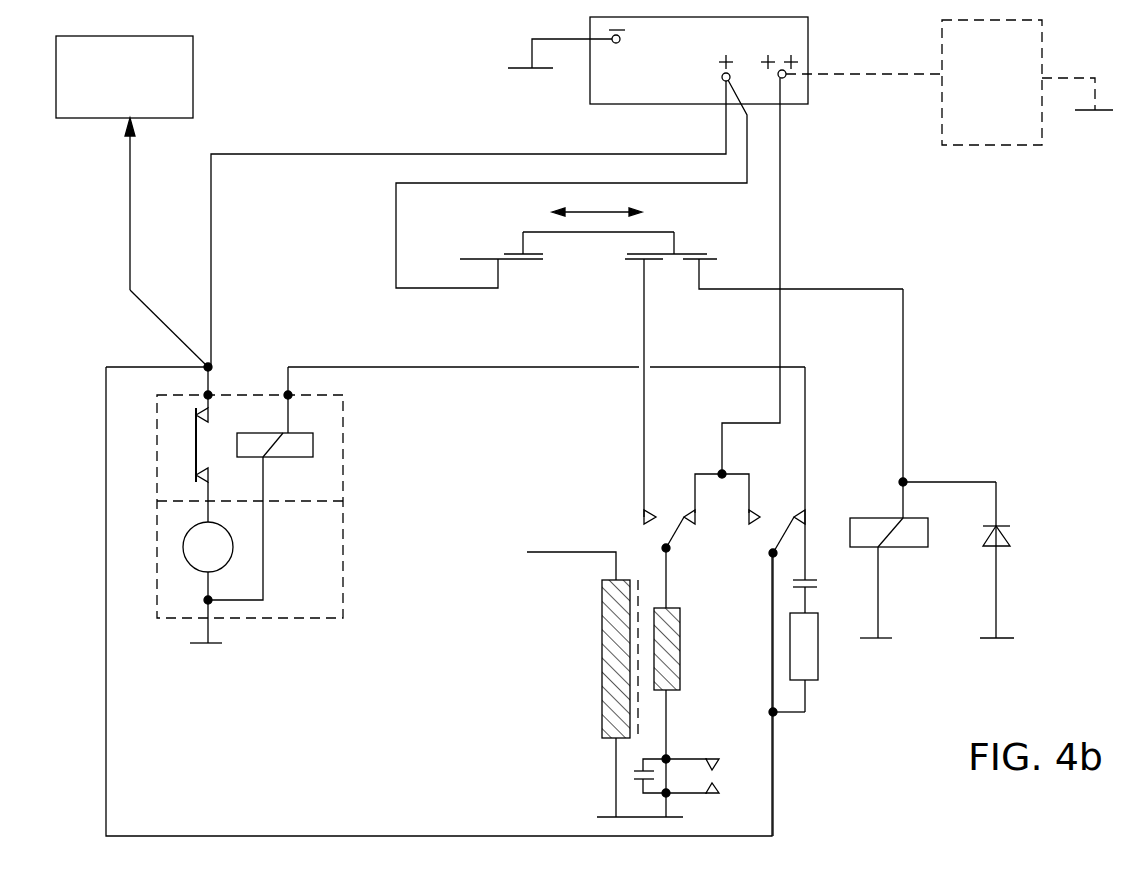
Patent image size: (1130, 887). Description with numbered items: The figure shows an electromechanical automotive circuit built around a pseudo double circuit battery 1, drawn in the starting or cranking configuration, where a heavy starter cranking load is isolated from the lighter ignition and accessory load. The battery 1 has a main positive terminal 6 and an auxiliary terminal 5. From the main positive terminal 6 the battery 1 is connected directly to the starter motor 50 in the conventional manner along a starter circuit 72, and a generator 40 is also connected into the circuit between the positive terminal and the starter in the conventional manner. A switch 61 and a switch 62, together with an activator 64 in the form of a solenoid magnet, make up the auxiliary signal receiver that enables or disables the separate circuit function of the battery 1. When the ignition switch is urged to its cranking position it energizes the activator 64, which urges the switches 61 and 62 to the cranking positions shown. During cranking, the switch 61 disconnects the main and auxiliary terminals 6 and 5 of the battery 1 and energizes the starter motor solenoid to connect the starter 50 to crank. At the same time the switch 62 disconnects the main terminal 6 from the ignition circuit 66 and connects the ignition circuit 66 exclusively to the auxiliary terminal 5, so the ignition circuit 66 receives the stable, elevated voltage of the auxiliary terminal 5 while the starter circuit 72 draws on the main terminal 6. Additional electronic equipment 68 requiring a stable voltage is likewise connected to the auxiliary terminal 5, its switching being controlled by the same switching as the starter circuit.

The battery 1 is at (808, 45).
The auxiliary terminal 5 is at (773, 87).
The main positive terminal 6 is at (715, 88).
The generator 40 is at (193, 107).
The starter motor 50 is at (343, 462).
The switch 61 is at (755, 548).
The switch 62 is at (641, 521).
The activator 64 is at (946, 482).
The ignition circuit 66 is at (554, 678).
The additional electronic equipment 68 is at (942, 100).
The starter circuit 72 is at (437, 154).